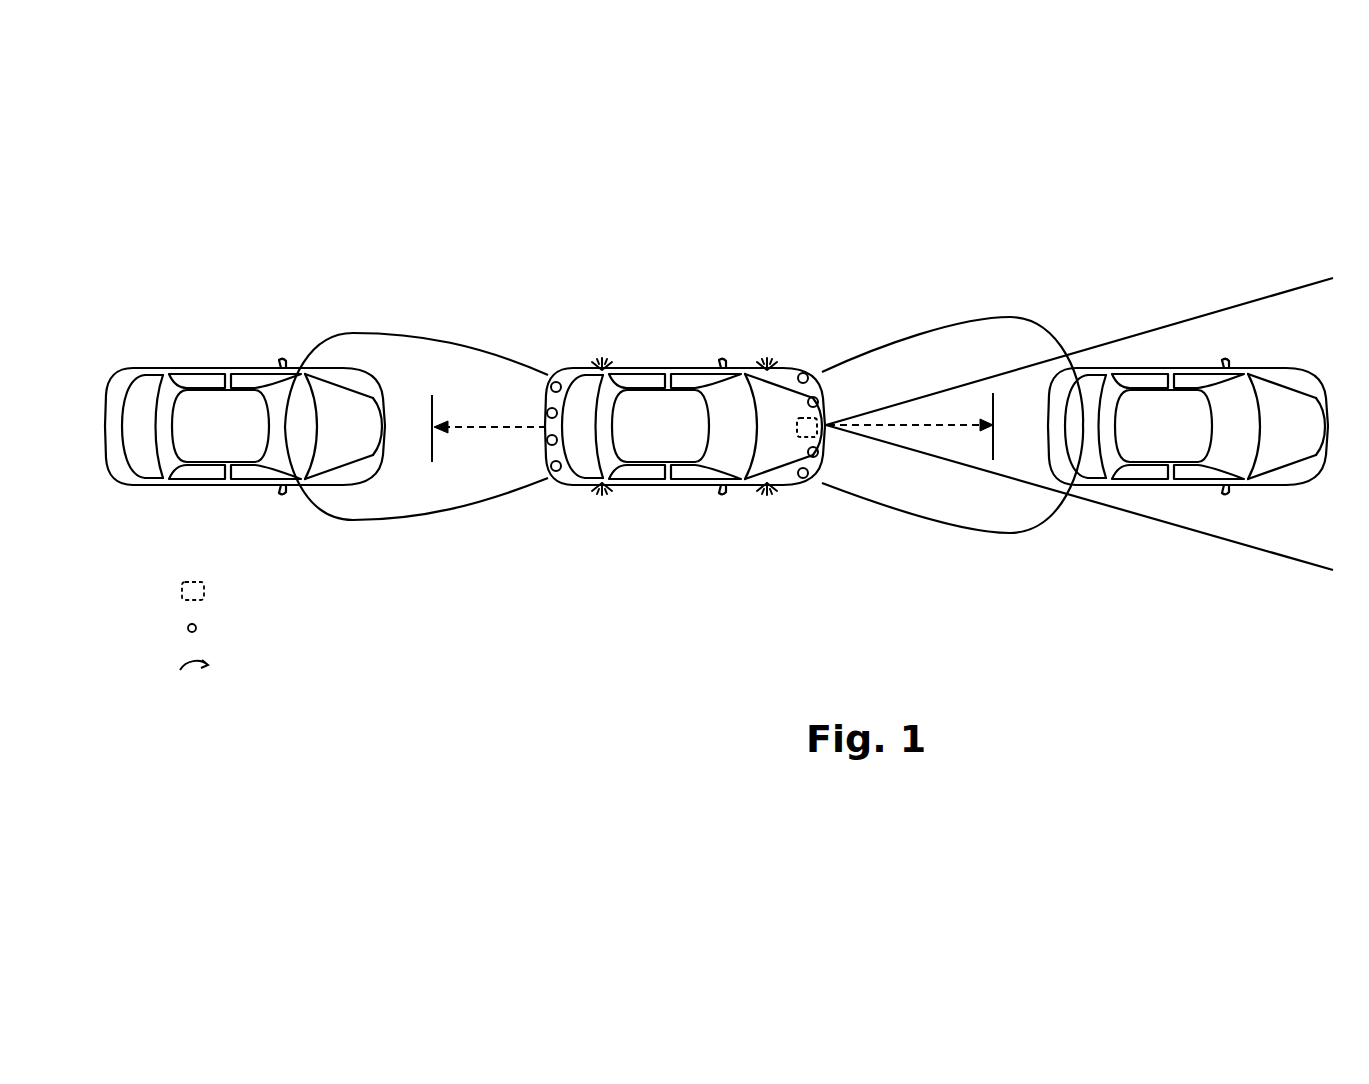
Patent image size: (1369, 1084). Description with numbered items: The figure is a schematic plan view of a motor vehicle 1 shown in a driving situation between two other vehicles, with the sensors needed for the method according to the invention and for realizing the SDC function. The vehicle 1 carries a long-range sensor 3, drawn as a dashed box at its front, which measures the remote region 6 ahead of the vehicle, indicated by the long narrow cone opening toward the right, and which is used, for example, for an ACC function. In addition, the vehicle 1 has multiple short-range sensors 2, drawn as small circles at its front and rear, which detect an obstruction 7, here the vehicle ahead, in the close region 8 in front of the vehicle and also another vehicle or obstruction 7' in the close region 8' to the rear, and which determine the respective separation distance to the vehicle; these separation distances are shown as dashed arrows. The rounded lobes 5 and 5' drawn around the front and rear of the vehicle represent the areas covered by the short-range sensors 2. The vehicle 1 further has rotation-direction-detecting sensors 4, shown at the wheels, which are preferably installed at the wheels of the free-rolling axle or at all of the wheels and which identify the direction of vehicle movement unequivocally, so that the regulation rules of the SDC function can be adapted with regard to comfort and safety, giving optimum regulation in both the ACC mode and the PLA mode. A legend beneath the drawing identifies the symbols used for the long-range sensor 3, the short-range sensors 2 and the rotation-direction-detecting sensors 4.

The motor vehicle 1 is at (676, 368).
The short-range sensor 2 is at (185, 628).
The long-range sensor 3 is at (182, 590).
The rotation-direction-detecting sensor 4 is at (178, 666).
The short-range detection region (front) 5 is at (952, 396).
The short-range detection region (rear) 5' is at (416, 399).
The remote region 6 is at (1129, 512).
The obstruction 7 is at (1188, 396).
The obstruction to the rear 7' is at (245, 391).
The close region ahead 8 is at (936, 415).
The close region to the rear 8' is at (468, 409).